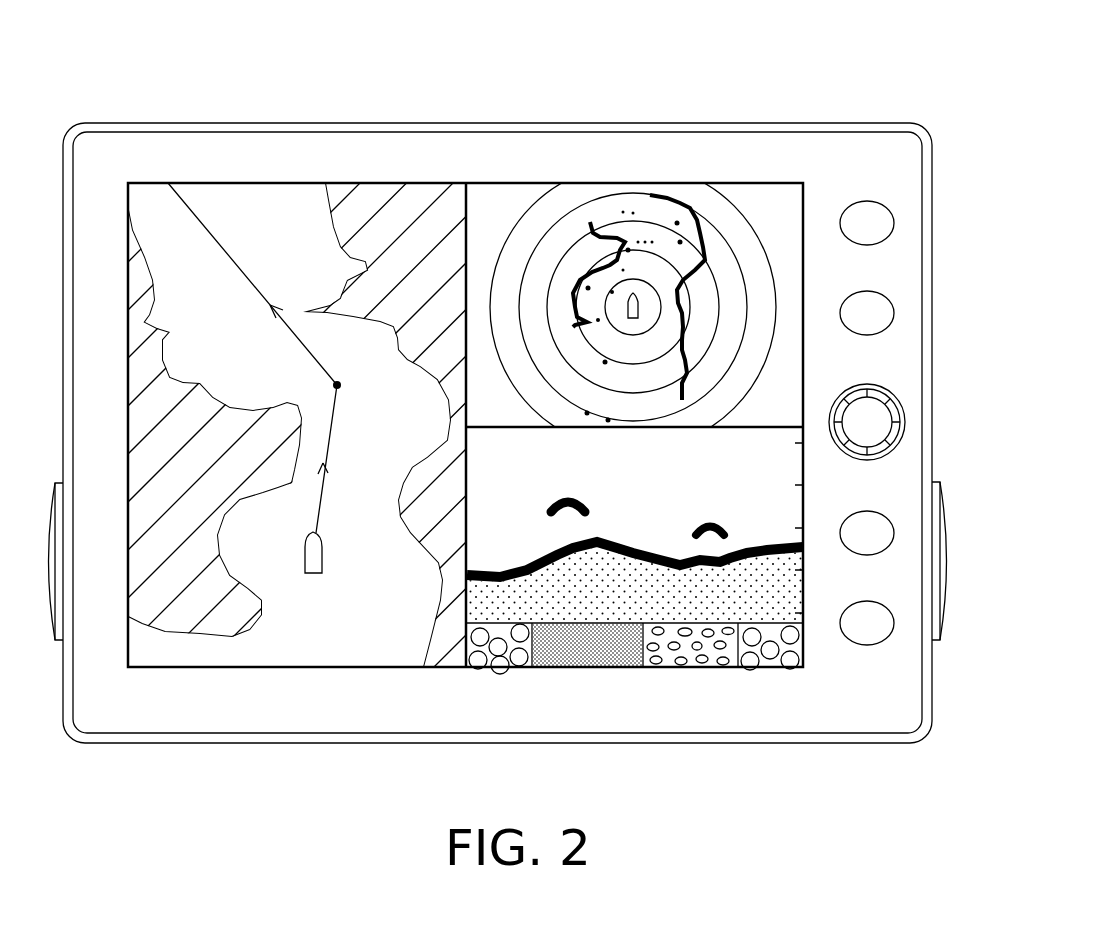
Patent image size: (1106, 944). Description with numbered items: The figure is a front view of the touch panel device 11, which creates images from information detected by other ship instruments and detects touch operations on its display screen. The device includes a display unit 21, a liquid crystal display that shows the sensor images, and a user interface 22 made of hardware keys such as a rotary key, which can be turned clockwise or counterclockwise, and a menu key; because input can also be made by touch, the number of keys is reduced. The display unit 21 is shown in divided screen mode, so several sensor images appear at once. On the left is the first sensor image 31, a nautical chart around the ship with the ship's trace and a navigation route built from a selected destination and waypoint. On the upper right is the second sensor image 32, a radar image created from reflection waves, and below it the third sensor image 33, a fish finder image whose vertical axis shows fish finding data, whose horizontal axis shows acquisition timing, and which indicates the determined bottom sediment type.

The touch panel device 11 is at (1003, 152).
The display unit 21 is at (817, 185).
The user interface 22 is at (908, 392).
The first sensor image 31 is at (126, 216).
The second sensor image 32 is at (800, 282).
The third sensor image 33 is at (807, 600).